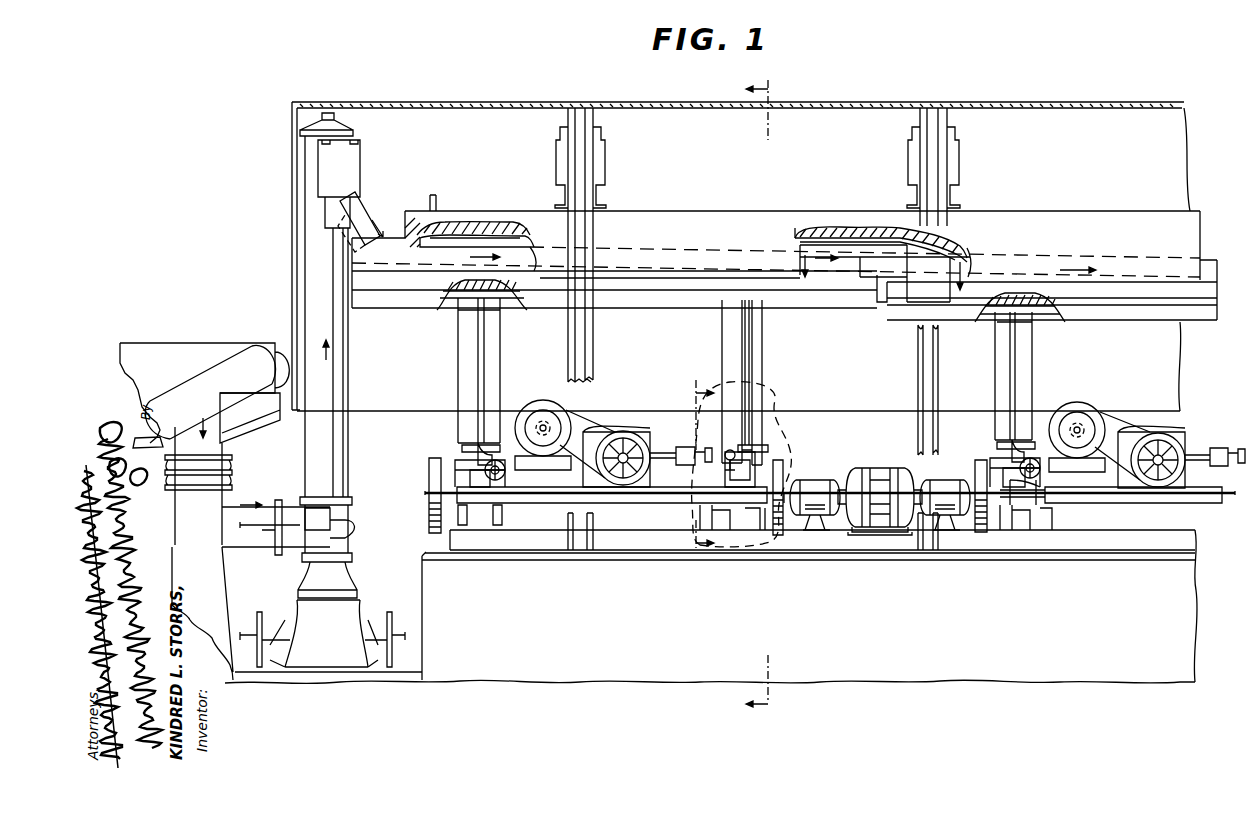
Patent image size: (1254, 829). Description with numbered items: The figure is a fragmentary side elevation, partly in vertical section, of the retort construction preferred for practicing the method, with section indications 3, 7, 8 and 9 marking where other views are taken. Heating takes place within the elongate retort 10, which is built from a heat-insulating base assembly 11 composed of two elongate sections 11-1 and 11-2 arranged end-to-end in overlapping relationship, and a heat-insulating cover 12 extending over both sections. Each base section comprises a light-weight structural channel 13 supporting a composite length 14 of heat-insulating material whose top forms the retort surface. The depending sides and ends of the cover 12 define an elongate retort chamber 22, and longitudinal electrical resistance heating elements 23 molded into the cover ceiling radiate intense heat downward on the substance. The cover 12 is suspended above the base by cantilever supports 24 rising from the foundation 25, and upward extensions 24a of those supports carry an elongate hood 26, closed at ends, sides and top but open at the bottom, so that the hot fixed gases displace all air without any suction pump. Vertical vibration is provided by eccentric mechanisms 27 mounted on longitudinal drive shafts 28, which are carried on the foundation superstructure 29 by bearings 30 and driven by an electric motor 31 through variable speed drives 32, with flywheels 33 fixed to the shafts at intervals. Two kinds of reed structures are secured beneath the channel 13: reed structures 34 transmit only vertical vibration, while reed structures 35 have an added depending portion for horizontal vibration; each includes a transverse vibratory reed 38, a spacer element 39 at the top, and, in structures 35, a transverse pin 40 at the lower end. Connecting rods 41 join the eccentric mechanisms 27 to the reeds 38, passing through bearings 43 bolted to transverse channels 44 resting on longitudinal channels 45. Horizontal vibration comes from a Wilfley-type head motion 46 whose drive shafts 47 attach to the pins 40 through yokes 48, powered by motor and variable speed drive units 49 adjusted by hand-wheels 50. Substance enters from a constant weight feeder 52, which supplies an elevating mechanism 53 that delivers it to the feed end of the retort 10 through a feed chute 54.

The section line 3- 3 is at (768, 396).
The detail section 7 is at (785, 450).
The section line 8- 8 is at (696, 458).
The section line 9- 9 is at (888, 278).
The retort 10 is at (741, 202).
The base assembly 11 is at (669, 315).
The base assembly section 11-1 is at (365, 317).
The base assembly section 11-2 is at (1170, 315).
The cover 12 is at (488, 230).
The structural channel 13 is at (455, 310).
The composite length of heat-insulation material 14 is at (509, 308).
The retort chamber 22 is at (531, 254).
The heating elements 23 is at (466, 232).
The cantilever supports 24 is at (598, 197).
The upward extensions 24a is at (587, 157).
The foundation 25 is at (912, 678).
The hood 26 is at (497, 103).
The eccentric mechanisms 27 is at (1042, 487).
The drive shafts 28 is at (432, 492).
The foundation superstructure 29 is at (516, 540).
The bearings 30 is at (1032, 500).
The electric motor 31 is at (898, 452).
The variable speed drives 32 is at (812, 482).
The flywheels 33 is at (418, 528).
The reed structures 34 is at (470, 388).
The reed structures 35 is at (735, 340).
The vibratory reed 38 is at (488, 440).
The spacer element 39 is at (752, 325).
The pin 40 is at (728, 460).
The connecting rods 41 is at (466, 445).
The bearings 43 is at (478, 474).
The transverse structural channels 44 is at (463, 461).
The longitudinal channels 45 is at (616, 498).
The head motion 46 is at (628, 430).
The drive shafts 47 is at (668, 452).
The yokes 48 is at (718, 458).
The motor and variable speed drive units 49 is at (556, 412).
The hand-wheels 50 is at (510, 455).
The constant weight feeder 52 is at (178, 338).
The elevating mechanism 53 is at (320, 298).
The feed chute 54 is at (352, 210).